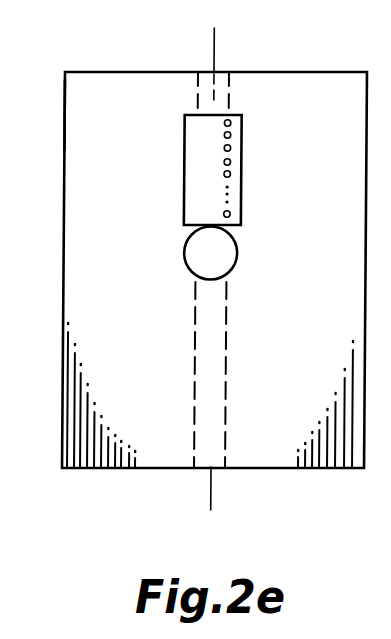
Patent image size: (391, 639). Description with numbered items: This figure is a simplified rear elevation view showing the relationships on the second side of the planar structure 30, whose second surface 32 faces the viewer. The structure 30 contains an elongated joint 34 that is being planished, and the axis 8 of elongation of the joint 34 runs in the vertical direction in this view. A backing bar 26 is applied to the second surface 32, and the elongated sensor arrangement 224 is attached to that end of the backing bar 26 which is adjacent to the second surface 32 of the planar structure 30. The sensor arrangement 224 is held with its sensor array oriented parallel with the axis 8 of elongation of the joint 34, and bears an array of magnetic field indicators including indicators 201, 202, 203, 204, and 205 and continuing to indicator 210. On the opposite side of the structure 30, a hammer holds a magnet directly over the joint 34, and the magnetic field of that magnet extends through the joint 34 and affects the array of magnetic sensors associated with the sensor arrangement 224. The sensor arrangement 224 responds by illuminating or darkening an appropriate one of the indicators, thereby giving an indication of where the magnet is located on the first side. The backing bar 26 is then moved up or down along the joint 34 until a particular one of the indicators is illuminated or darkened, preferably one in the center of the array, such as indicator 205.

The axis of elongation of the joint 8 is at (214, 50).
The backing bar 26 is at (238, 262).
The planar structure 30 is at (340, 72).
The second surface of the planar structure 32 is at (81, 115).
The joint 34 is at (198, 108).
The magnetic field indicator 201 is at (231, 123).
The magnetic field indicator 202 is at (225, 135).
The magnetic field indicator 203 is at (231, 148).
The magnetic field indicator 204 is at (225, 163).
The magnetic field indicator 205 is at (231, 175).
The magnetic field indicator 210 is at (231, 214).
The sensor arrangement 224 is at (185, 222).